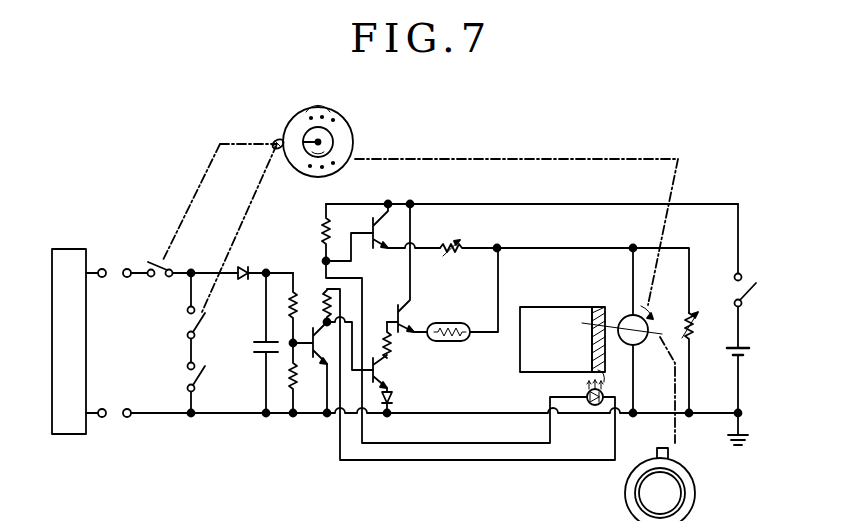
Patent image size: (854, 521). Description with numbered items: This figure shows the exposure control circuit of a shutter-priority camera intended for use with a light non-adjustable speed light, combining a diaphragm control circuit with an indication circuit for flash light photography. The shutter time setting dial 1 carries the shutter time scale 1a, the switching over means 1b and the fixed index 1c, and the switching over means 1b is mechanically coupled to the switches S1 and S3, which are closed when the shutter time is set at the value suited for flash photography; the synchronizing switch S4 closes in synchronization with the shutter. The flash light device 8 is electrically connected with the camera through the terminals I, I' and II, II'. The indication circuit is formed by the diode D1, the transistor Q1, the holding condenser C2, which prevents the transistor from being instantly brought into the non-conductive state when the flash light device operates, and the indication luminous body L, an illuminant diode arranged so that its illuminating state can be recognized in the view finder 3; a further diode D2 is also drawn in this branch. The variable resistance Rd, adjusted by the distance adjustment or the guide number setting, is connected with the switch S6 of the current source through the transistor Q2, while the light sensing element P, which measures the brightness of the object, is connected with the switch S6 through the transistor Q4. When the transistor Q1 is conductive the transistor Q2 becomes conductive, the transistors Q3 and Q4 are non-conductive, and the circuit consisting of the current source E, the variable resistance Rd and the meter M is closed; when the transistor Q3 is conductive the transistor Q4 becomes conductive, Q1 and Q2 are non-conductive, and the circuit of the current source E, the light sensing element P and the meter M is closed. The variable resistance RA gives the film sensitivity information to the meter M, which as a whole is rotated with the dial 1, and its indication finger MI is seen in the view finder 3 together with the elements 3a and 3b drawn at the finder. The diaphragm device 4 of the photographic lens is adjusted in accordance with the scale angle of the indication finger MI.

The shutter time setting dial 1 is at (354, 118).
The shutter time scale 1a is at (310, 112).
The switching over means 1b is at (274, 140).
The fixed index 1c is at (312, 154).
The flash light device 8 is at (70, 434).
The terminal I is at (134, 257).
The terminal I' is at (97, 257).
The terminal II is at (124, 397).
The terminal II' is at (99, 397).
The switch S1 is at (193, 282).
The switch S3 is at (184, 319).
The synchronizing switch S4 is at (184, 388).
The current source switch S6 is at (731, 276).
The diode D1 is at (262, 262).
The diode D2 is at (401, 403).
The holding condenser C2 is at (253, 344).
The transistor Q1 is at (310, 367).
The transistor Q2 is at (403, 242).
The transistor Q3 is at (392, 357).
The transistor Q4 is at (415, 268).
The variable resistance Rd is at (561, 269).
The light sensing element P is at (449, 342).
The view finder 3 is at (530, 352).
The filter plate 3a is at (597, 322).
The filter plate lower part 3b is at (619, 383).
The indication finger MI is at (619, 318).
The meter M is at (643, 345).
The variable resistance RA is at (703, 362).
The current source E is at (746, 394).
The indication luminous body L is at (595, 405).
The diaphragm device 4 is at (695, 497).